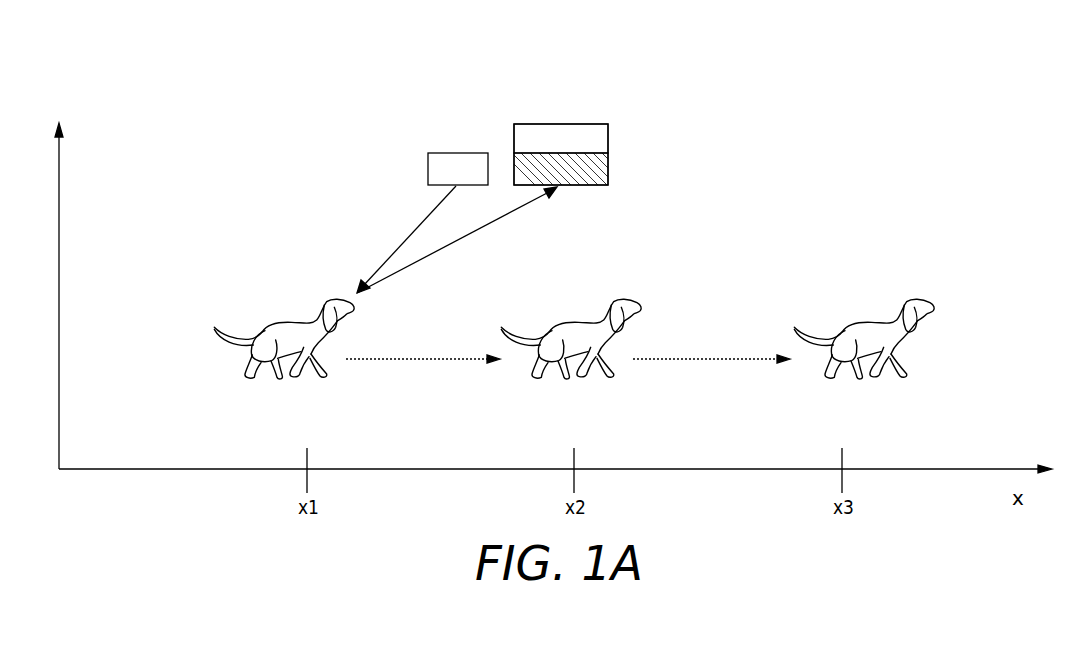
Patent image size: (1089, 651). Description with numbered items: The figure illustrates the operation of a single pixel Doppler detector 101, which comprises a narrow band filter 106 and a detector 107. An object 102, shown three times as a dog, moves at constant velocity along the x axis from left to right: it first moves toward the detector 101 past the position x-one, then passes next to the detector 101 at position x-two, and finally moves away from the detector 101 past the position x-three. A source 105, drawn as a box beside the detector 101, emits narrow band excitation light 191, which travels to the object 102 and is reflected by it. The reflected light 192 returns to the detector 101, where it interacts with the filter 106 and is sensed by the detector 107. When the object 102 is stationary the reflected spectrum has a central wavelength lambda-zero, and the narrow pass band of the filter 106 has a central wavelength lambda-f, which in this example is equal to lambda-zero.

The single pixel Doppler detector 101 is at (584, 100).
The object 102 is at (289, 322).
The source 105 is at (445, 152).
The narrow band filter 106 is at (608, 165).
The detector 107 is at (608, 137).
The narrow band excitation light 191 is at (417, 230).
The reflected light 192 is at (457, 240).